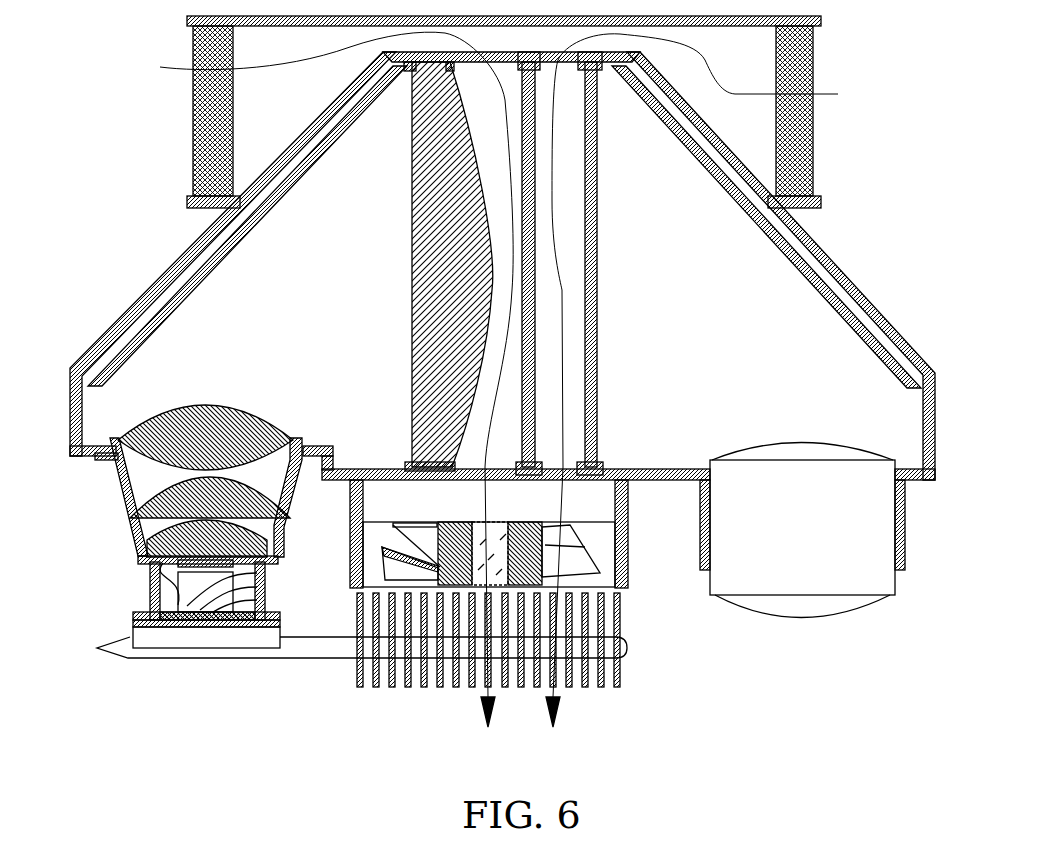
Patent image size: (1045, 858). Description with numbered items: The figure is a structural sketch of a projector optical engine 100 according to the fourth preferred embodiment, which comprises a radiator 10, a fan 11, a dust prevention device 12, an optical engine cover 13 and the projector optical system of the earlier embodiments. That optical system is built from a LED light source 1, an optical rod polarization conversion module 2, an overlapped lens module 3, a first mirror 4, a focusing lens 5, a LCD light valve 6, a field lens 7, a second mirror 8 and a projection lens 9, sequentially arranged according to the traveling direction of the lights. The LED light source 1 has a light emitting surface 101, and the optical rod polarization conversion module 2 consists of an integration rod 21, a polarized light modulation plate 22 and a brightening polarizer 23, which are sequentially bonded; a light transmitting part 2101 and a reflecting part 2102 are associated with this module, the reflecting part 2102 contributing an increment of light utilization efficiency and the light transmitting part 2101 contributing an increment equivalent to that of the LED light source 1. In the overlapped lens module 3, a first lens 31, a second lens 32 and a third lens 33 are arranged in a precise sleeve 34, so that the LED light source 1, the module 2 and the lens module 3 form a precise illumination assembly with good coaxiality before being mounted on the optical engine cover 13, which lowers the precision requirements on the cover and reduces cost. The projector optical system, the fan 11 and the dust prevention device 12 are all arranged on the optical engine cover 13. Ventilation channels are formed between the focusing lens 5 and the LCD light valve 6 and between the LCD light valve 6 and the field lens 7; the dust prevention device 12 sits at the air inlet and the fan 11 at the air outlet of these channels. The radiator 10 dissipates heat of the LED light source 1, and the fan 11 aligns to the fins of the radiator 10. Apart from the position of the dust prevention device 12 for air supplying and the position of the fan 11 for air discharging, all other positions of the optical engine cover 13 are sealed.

The projector optical engine 100 is at (88, 178).
The LED light source 1 is at (130, 623).
The optical rod polarization conversion module 2 is at (44, 572).
The integration rod 21 is at (147, 602).
The polarized light modulation plate 22 is at (150, 592).
The brightening polarizer 23 is at (150, 571).
The light emitting surface 101 is at (257, 600).
The light transmitting part 2101 is at (257, 587).
The reflecting part 2102 is at (257, 573).
The overlapped lens module 3 is at (44, 473).
The first lens 31 is at (162, 540).
The second lens 32 is at (148, 522).
The third lens 33 is at (148, 497).
The precise sleeve 34 is at (143, 462).
The first mirror 4 is at (182, 290).
The focusing lens 5 is at (410, 342).
The LCD light valve 6 is at (530, 448).
The field lens 7 is at (597, 405).
The second mirror 8 is at (730, 195).
The projection lens 9 is at (753, 607).
The radiator 10 is at (624, 642).
The fan 11 is at (592, 565).
The dust prevention device 12 is at (193, 132).
The optical engine cover 13 is at (150, 290).